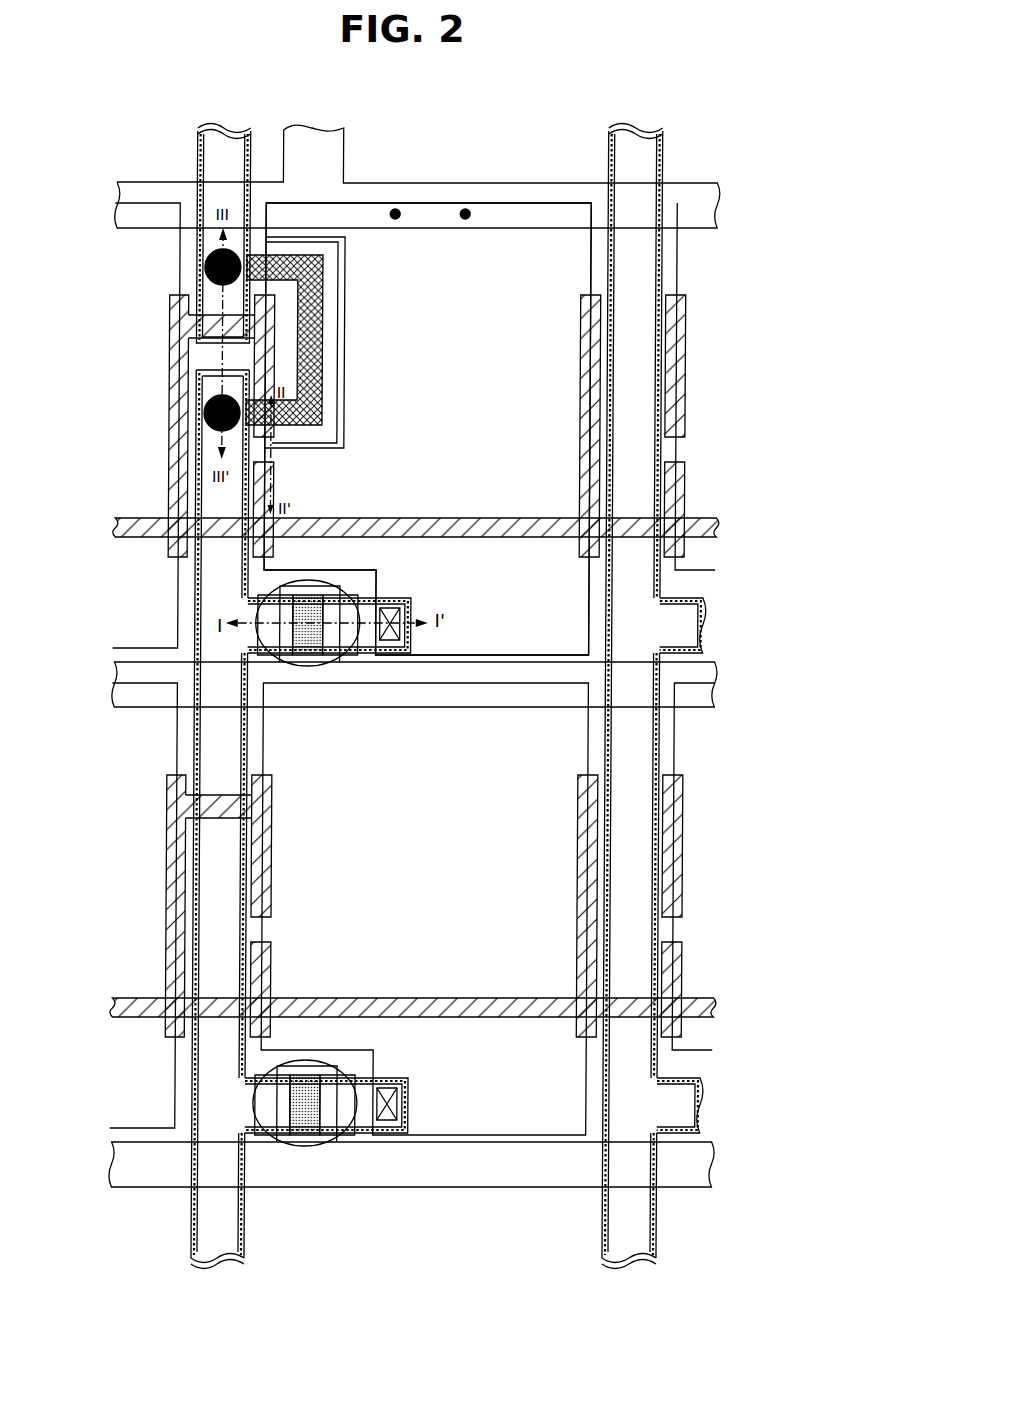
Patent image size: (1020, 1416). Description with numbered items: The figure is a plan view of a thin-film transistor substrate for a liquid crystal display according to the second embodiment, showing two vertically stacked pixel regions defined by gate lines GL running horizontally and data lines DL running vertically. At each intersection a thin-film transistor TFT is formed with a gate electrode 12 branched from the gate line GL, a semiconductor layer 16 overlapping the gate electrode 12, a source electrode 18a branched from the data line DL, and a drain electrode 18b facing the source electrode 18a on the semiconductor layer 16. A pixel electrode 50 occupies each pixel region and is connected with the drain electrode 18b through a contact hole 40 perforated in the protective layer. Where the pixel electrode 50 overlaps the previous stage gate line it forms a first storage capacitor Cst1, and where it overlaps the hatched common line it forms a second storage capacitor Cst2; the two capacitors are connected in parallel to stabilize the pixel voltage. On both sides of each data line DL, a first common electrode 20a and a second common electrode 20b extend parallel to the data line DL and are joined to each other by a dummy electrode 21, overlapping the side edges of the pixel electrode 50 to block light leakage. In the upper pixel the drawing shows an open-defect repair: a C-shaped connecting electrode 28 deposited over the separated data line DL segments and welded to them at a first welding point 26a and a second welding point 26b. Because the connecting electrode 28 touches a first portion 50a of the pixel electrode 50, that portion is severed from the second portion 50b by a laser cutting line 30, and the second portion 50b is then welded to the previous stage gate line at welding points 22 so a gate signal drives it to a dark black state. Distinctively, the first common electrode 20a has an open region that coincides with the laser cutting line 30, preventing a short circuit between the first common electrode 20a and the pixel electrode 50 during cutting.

The gate electrode 12 is at (310, 655).
The semiconductor layer 16 is at (305, 593).
The source electrode 18a is at (268, 642).
The drain electrode 18b is at (370, 635).
The first common electrode 20a is at (262, 500).
The second common electrode 20b is at (180, 455).
The dummy electrode 21 is at (125, 544).
The welding points 22 is at (465, 212).
The first welding point 26a is at (205, 267).
The second welding point 26b is at (205, 413).
The connecting electrode 28 is at (323, 339).
The laser cutting line 30 is at (345, 390).
The contact hole 40 is at (400, 633).
The pixel electrode 50 is at (583, 270).
The first portion of the pixel electrode 50a is at (338, 300).
The second portion of the pixel electrode 50b is at (428, 429).
The data line DL is at (197, 742).
The gate line GL is at (373, 183).
The thin-film transistor TFT is at (333, 660).
The first storage capacitor Cst1 is at (517, 236).
The second storage capacitor Cst2 is at (516, 502).